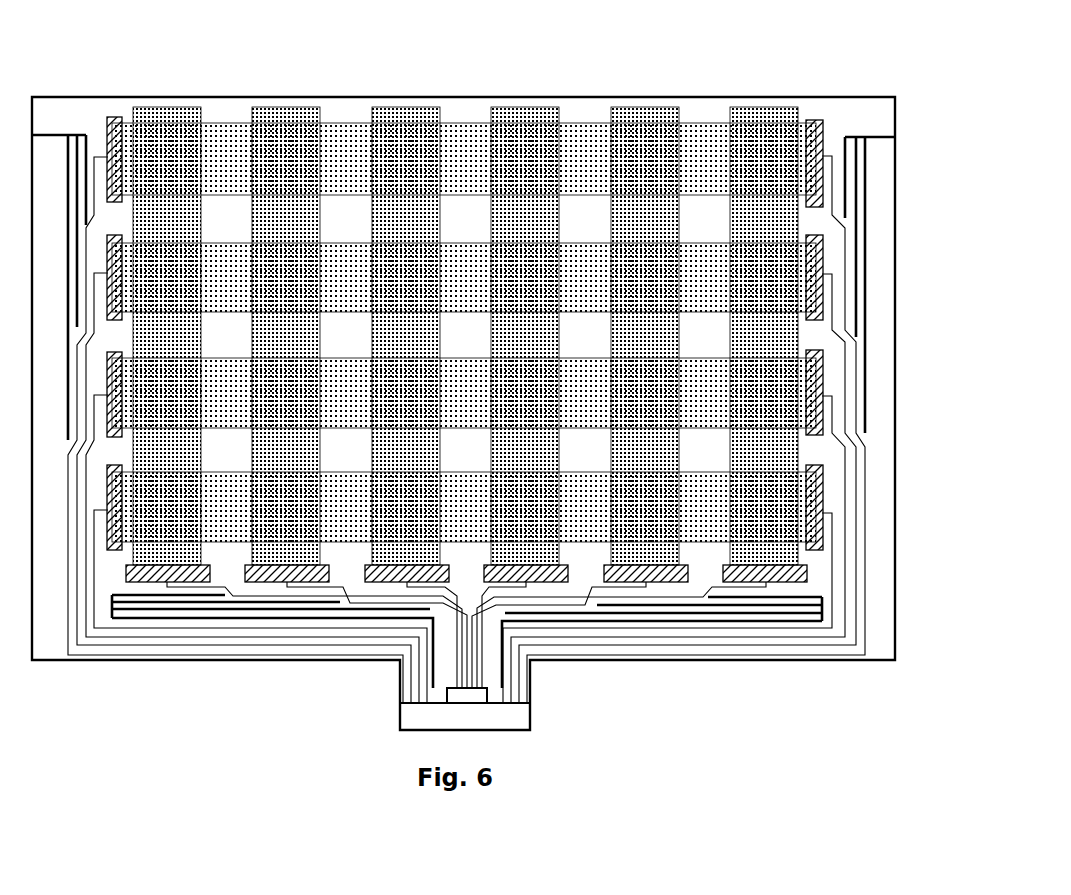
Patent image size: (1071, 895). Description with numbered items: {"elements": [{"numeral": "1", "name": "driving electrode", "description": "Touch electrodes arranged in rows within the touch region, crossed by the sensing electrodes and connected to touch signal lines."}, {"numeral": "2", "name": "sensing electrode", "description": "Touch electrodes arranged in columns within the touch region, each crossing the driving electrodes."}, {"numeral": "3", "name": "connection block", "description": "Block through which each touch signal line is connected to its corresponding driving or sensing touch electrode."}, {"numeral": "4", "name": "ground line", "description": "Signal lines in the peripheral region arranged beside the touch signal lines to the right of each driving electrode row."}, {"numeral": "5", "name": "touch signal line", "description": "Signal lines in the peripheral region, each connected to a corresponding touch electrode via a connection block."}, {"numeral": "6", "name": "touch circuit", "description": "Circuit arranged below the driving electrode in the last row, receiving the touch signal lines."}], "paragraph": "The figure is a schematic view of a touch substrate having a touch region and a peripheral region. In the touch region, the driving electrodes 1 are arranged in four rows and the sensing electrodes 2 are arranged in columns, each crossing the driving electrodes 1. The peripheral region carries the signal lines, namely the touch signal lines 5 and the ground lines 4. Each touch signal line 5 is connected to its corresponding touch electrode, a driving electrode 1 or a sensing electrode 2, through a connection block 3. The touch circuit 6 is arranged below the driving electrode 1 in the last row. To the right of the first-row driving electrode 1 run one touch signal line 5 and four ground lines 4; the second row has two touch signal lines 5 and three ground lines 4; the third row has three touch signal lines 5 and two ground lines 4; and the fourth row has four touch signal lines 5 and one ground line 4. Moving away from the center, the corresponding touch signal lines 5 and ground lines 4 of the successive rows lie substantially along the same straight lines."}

The first touch electrode (horizontal) 1 is at (400, 136).
The second touch electrode (vertical) 2 is at (527, 112).
The connection pad 3 is at (813, 122).
The shielding trace 4 is at (866, 290).
The signal wire 5 is at (846, 390).
The bonding terminal 6 is at (465, 708).